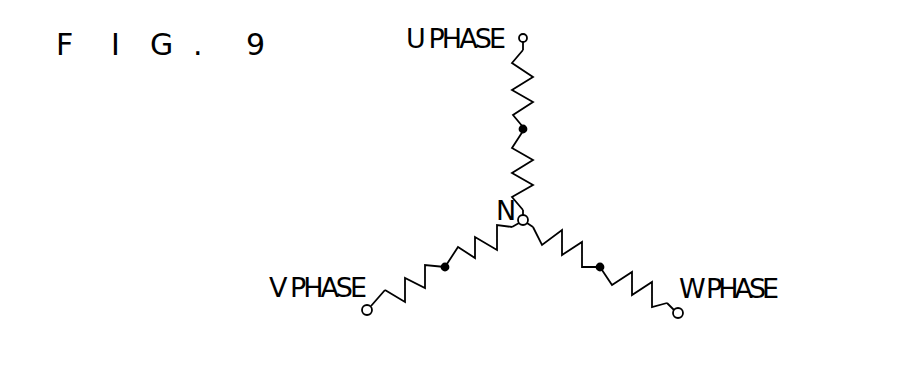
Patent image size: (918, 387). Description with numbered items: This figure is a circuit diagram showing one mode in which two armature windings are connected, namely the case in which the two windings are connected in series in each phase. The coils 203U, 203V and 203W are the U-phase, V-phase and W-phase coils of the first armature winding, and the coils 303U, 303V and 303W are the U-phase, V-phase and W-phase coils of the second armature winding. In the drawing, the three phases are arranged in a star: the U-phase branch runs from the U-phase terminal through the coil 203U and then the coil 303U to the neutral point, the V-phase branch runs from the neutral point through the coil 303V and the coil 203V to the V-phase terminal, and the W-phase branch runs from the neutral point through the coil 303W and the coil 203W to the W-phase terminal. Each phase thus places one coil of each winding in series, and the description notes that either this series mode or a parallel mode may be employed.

The U-phase coil of armature winding 203 203U is at (535, 78).
The U-phase coil of armature winding 303 303U is at (536, 158).
The V-phase coil of armature winding 303 303V is at (477, 259).
The V-phase coil of armature winding 203 203V is at (424, 290).
The W-phase coil of armature winding 303 303W is at (568, 242).
The W-phase coil of armature winding 203 203W is at (633, 268).